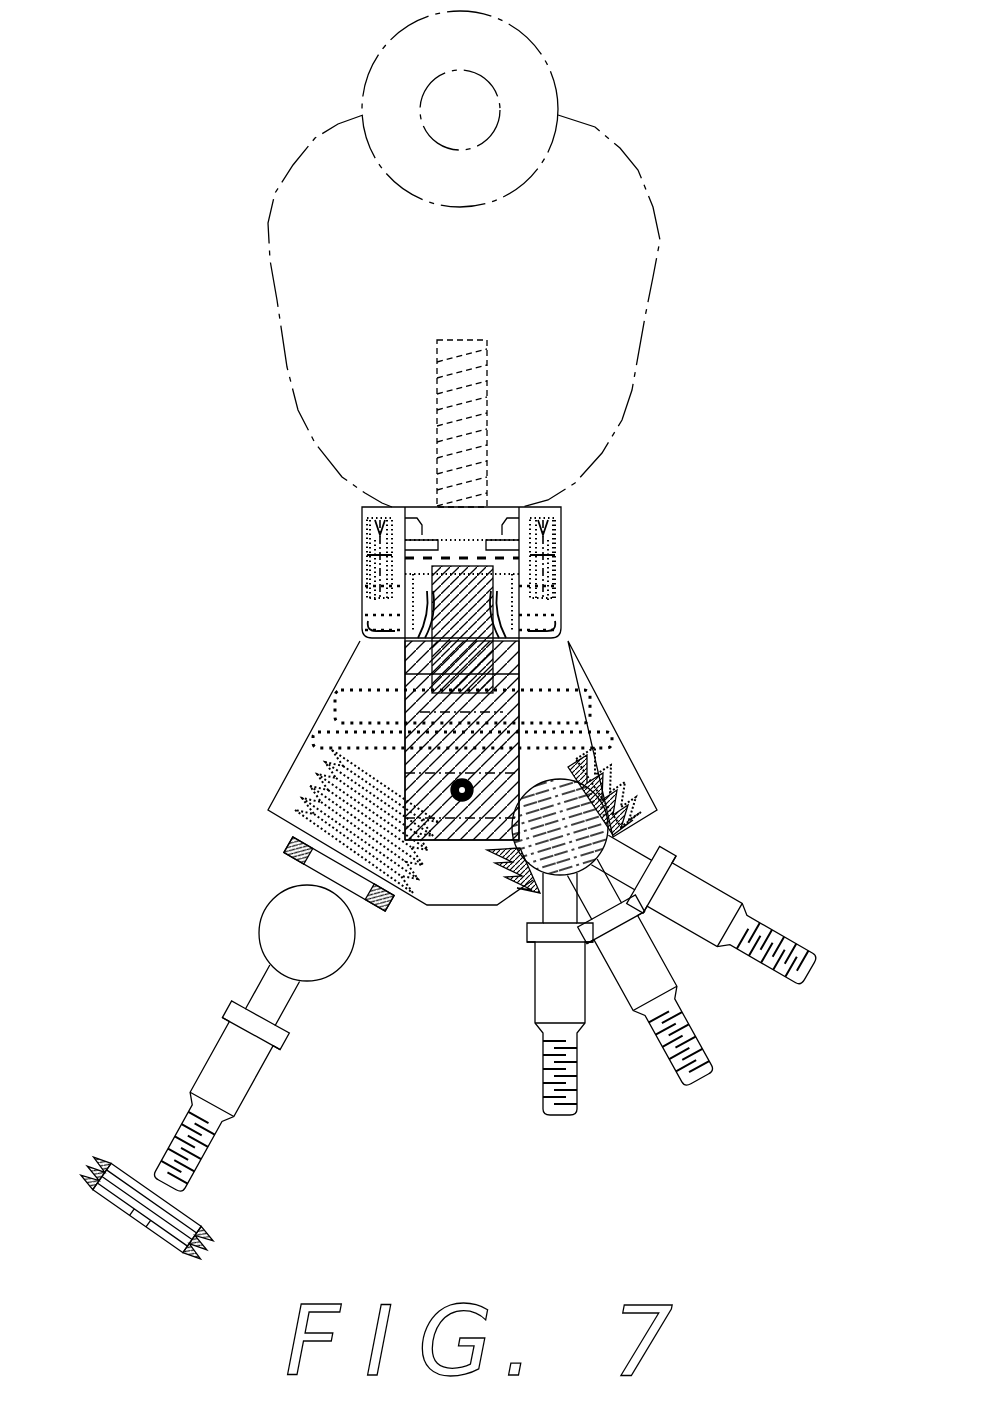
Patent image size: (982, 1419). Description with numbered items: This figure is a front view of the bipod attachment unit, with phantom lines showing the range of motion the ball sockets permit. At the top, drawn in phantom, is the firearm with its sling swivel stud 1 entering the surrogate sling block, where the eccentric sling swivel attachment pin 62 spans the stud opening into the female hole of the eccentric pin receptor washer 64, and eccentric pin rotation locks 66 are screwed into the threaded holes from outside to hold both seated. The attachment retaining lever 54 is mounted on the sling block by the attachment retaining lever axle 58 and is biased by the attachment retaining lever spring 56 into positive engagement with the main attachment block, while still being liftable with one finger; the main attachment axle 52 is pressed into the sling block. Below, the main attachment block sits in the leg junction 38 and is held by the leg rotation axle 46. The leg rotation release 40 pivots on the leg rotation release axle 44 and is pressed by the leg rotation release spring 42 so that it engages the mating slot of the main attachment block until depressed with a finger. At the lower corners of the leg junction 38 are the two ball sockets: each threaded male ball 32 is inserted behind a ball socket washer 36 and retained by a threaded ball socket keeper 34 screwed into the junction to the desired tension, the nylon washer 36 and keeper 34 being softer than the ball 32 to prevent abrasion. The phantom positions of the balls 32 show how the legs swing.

The threaded stud 1 is at (485, 340).
The threaded male ball 32 is at (273, 942).
The threaded ball socket keeper 34 is at (213, 1228).
The ball socket washer 36 is at (287, 851).
The leg junction 38 is at (640, 798).
The leg rotation release 40 is at (405, 738).
The leg rotation release spring 42 is at (457, 840).
The leg rotation release axle 44 is at (612, 738).
The leg rotation axle 46 is at (568, 702).
The main attachment axle 52 is at (562, 597).
The attachment retaining lever 54 is at (407, 632).
The attachment retaining lever spring 56 is at (562, 535).
The attachment retaining lever axle 58 is at (562, 623).
The eccentric sling swivel attachment pin 62 is at (360, 503).
The eccentric pin receptor washer 64 is at (557, 500).
The eccentric pin rotation locks 66 is at (392, 531).